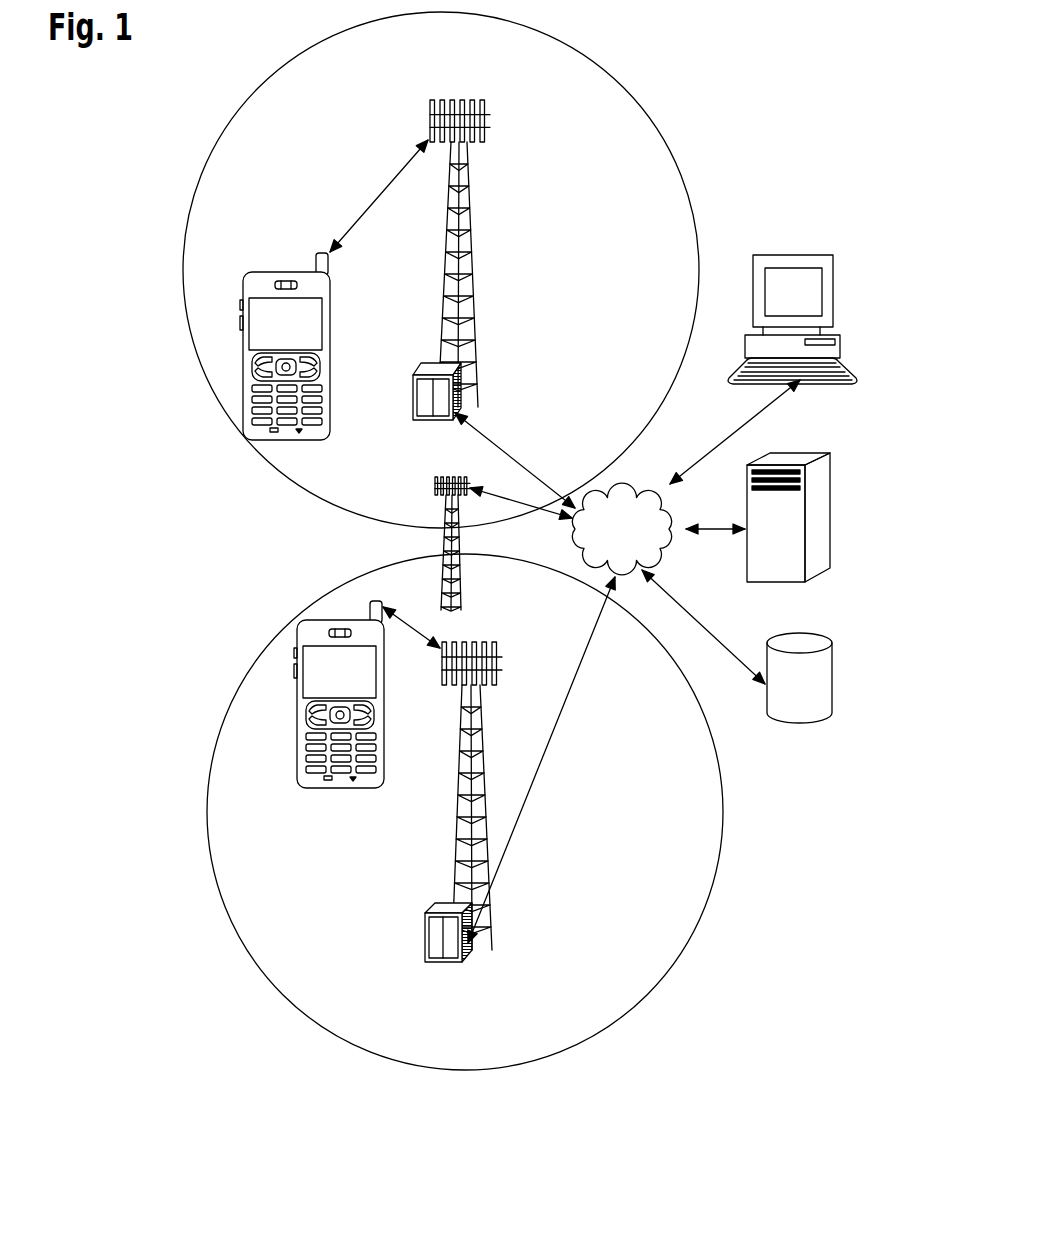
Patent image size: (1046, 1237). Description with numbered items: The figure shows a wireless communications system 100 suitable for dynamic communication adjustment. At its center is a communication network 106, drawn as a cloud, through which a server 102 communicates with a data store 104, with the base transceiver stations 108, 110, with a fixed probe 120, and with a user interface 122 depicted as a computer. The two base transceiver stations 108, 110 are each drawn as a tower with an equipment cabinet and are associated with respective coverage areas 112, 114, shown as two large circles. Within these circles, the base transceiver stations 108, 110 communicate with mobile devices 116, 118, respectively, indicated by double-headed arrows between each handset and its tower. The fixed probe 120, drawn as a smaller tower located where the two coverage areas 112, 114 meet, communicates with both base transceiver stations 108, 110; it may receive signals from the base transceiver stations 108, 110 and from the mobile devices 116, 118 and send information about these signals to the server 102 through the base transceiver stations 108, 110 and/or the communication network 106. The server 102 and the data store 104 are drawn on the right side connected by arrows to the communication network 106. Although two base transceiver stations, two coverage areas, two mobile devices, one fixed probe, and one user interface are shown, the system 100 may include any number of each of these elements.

The wireless communications system 100 is at (638, 22).
The server 102 is at (752, 583).
The data store 104 is at (787, 716).
The communication network 106 is at (573, 540).
The base transceiver station 108 is at (428, 421).
The base transceiver station 110 is at (440, 963).
The coverage area 112 is at (311, 491).
The coverage area 114 is at (347, 1048).
The mobile device 116 is at (249, 441).
The mobile device 118 is at (312, 623).
The fixed probe 120 is at (445, 542).
The user interface 122 is at (740, 385).